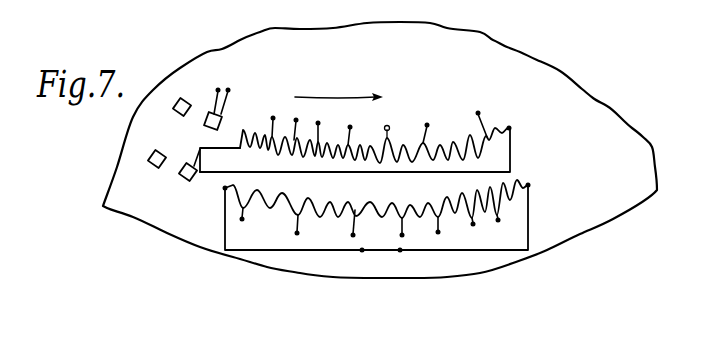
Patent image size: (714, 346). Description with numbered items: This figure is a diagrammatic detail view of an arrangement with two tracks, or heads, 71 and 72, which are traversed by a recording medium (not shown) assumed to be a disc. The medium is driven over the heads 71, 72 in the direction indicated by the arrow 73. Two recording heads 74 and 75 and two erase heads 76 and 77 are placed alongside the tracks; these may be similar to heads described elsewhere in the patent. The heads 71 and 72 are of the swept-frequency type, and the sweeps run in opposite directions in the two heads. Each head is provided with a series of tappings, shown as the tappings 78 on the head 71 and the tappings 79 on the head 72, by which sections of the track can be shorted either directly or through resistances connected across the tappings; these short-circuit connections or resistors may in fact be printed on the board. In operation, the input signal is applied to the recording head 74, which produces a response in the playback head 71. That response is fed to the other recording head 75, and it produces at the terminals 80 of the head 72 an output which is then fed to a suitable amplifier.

The playback head 71 is at (455, 136).
The head 72 is at (453, 205).
The arrow 73 is at (335, 97).
The recording head 74 is at (223, 113).
The recording head 75 is at (184, 182).
The erase head 76 is at (186, 101).
The erase head 77 is at (151, 168).
The tappings 78 is at (387, 125).
The tappings 79 is at (297, 235).
The terminals 80 is at (400, 250).